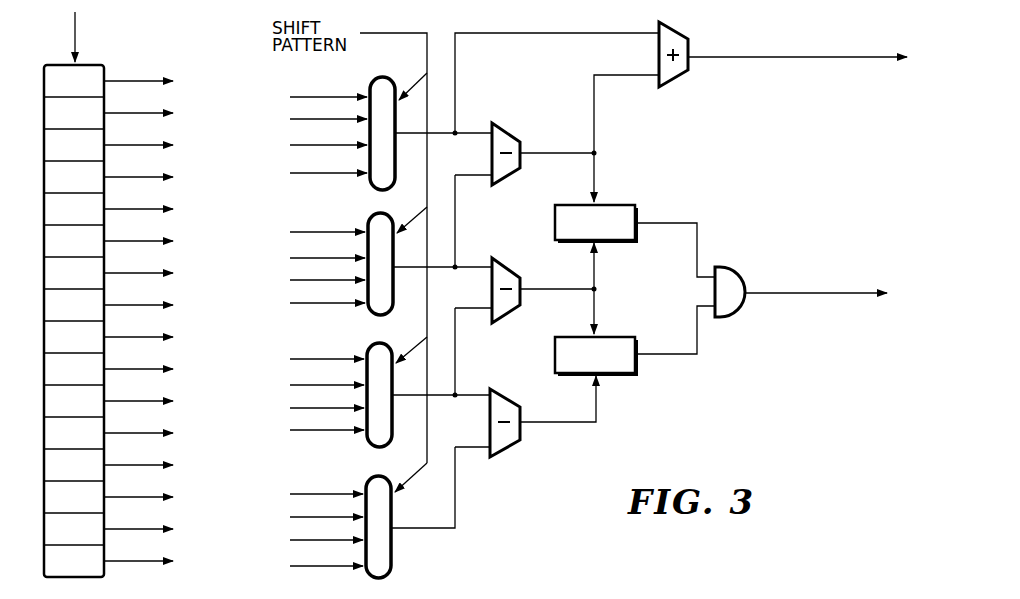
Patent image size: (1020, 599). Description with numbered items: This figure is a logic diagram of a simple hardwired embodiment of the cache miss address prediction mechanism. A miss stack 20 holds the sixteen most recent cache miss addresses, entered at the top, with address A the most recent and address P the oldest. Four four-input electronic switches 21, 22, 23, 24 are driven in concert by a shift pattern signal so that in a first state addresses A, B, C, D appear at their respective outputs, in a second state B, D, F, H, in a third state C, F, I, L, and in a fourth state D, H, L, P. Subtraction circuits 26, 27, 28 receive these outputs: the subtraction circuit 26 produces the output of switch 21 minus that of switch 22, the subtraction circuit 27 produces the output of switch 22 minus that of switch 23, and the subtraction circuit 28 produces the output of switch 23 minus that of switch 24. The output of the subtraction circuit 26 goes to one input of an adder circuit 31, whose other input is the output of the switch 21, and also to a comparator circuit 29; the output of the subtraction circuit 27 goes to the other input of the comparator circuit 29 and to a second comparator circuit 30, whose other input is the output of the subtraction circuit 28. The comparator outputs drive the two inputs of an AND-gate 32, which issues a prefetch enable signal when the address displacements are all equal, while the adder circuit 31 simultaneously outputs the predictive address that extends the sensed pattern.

The miss stack 20 is at (119, 52).
The four-input electronic switch 21 is at (369, 188).
The four-input electronic switch 22 is at (370, 315).
The four-input electronic switch 23 is at (370, 447).
The four-input electronic switch 24 is at (366, 578).
The subtraction circuit 26 is at (521, 142).
The subtraction circuit 27 is at (500, 268).
The subtraction circuit 28 is at (493, 390).
The comparator circuit 29 is at (638, 209).
The comparator circuit 30 is at (628, 336).
The adder circuit 31 is at (688, 46).
The AND-gate 32 is at (728, 265).